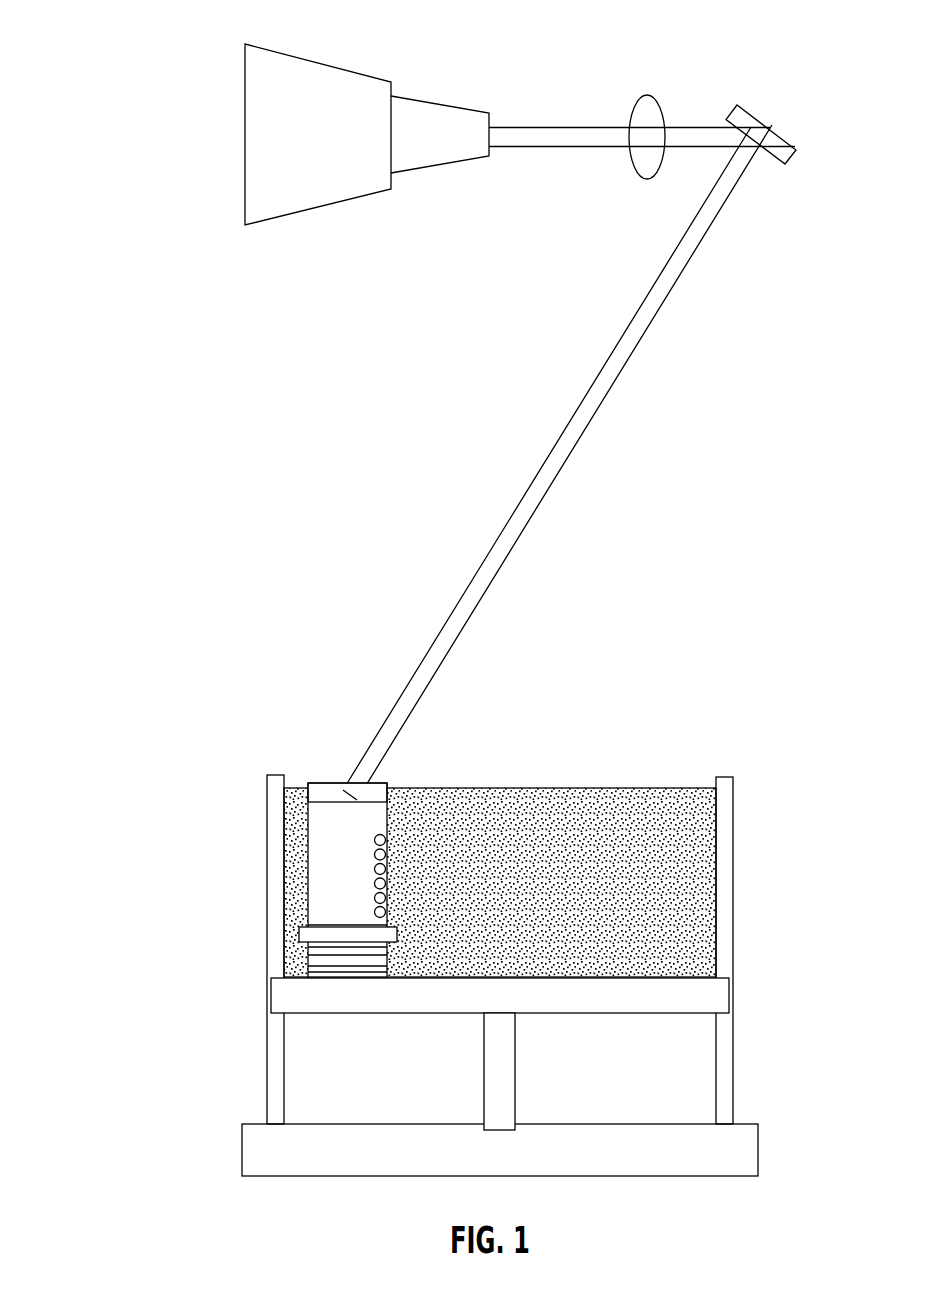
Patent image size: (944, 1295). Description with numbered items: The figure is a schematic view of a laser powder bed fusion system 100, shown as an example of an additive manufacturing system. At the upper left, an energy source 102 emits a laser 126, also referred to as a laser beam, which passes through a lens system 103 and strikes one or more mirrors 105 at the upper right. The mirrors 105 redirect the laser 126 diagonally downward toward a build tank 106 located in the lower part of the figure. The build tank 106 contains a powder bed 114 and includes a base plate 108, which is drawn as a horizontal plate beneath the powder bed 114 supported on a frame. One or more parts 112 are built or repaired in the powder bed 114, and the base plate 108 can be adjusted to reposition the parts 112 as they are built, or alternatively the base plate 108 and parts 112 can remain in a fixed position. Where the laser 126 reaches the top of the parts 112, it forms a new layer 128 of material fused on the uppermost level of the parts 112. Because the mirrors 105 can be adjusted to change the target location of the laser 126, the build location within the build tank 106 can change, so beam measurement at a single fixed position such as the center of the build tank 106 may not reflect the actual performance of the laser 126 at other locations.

The laser powder bed fusion system 100 is at (130, 29).
The energy source 102 is at (245, 135).
The lens system 103 is at (645, 95).
The mirrors 105 is at (770, 123).
The laser 126 is at (565, 428).
The build tank 106 is at (273, 775).
The powder bed 114 is at (658, 787).
The parts 112 is at (337, 893).
The new layer 128 is at (342, 788).
The base plate 108 is at (283, 993).